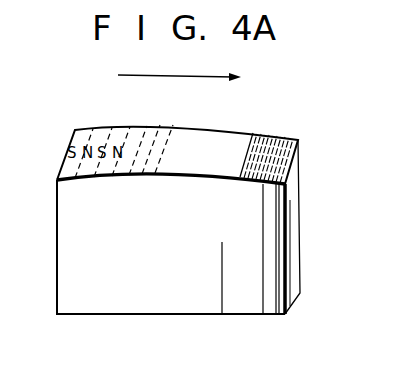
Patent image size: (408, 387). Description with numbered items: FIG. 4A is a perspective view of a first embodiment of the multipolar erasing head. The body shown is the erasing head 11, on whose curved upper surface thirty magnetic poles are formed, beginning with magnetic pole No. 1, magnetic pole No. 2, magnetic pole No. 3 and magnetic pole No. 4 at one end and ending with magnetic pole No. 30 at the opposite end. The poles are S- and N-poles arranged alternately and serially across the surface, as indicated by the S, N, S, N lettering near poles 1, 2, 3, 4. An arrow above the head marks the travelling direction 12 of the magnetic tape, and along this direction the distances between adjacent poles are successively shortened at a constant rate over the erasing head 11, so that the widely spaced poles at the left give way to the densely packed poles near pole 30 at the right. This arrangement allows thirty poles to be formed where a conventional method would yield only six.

The magnetic pole No. 1 is at (81, 131).
The magnetic pole No. 2 is at (99, 130).
The magnetic pole No. 3 is at (117, 129).
The magnetic pole No. 4 is at (135, 128).
The erasing head 11 is at (63, 243).
The travelling direction of the magnetic tape 12 is at (219, 62).
The magnetic pole No. 30 is at (298, 140).